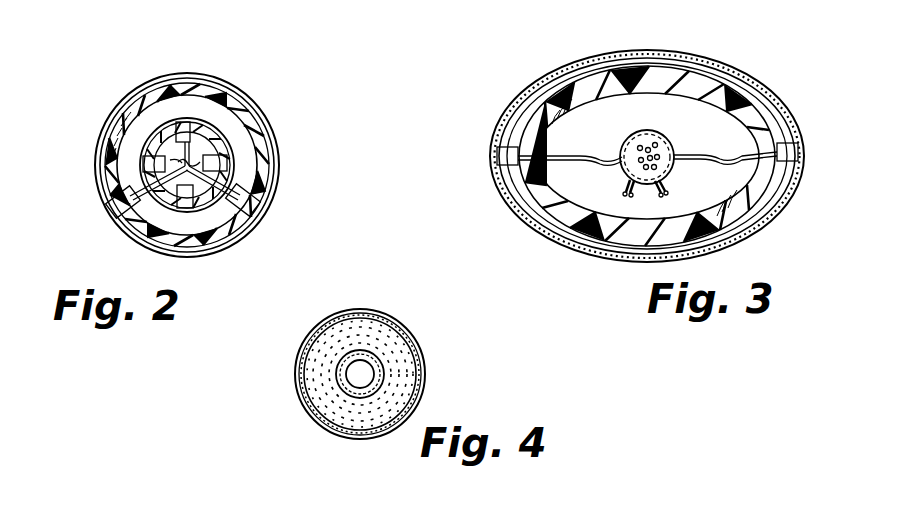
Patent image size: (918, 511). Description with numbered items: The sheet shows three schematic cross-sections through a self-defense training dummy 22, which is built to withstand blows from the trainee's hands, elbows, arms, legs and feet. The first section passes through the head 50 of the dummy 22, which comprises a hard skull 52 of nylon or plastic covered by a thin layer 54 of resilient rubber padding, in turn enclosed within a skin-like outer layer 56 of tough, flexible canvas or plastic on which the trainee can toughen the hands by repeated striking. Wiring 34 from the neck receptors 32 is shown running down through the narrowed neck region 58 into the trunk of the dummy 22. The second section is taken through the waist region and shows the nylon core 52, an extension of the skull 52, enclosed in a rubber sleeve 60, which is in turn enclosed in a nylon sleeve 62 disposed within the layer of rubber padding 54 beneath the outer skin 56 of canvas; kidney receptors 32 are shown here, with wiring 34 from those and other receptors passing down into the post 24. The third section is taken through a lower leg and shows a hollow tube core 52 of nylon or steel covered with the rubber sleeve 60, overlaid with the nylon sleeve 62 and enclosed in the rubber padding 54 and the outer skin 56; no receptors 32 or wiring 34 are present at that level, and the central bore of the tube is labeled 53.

In FIG. 3, the dummy 22 is at (768, 72).
In FIG. 3, the post 24 is at (627, 147).
In FIG. 2, the receptors 32 is at (186, 120).
In FIG. 3, the receptors 32 is at (490, 160).
In FIG. 2, the wiring 34 is at (205, 148).
In FIG. 3, the wiring 34 is at (717, 128).
In FIG. 2, the head 50 is at (282, 157).
In FIG. 2, the skull 52 is at (153, 102).
In FIG. 3, the skull 52 is at (673, 88).
In FIG. 4, the inner tube 53 is at (360, 357).
In FIG. 2, the layer of resilient rubber padding 54 is at (110, 130).
In FIG. 3, the layer of resilient rubber padding 54 is at (535, 93).
In FIG. 4, the layer of resilient rubber padding 54 is at (317, 385).
In FIG. 2, the skin-like outer layer 56 is at (97, 161).
In FIG. 3, the skin-like outer layer 56 is at (497, 127).
In FIG. 4, the skin-like outer layer 56 is at (297, 372).
In FIG. 2, the narrowed neck region 58 is at (236, 146).
In FIG. 2, the rubber sleeve 60 is at (120, 93).
In FIG. 3, the rubber sleeve 60 is at (663, 73).
In FIG. 4, the rubber sleeve 60 is at (377, 360).
In FIG. 3, the nylon sleeve 62 is at (600, 67).
In FIG. 4, the nylon sleeve 62 is at (385, 388).